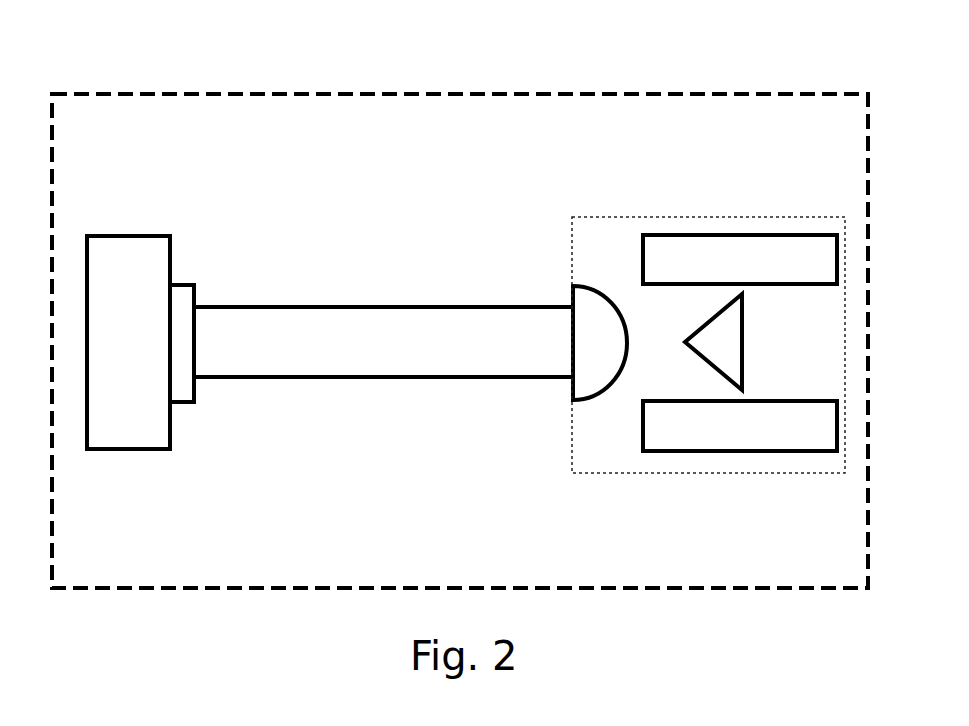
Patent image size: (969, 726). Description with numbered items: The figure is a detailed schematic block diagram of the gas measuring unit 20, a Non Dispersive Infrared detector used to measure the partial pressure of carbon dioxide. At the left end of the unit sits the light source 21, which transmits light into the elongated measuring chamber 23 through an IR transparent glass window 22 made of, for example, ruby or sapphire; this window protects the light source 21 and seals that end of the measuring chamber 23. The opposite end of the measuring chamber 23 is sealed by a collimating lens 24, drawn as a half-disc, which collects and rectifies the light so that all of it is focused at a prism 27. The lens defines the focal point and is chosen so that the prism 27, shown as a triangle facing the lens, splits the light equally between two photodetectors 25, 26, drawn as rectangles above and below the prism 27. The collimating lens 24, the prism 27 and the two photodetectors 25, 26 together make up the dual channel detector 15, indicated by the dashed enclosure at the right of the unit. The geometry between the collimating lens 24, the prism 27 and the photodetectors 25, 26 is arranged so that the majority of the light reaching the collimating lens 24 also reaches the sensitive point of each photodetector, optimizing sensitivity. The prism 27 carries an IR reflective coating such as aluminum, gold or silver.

The gas measuring unit 20 is at (478, 92).
The light source 21 is at (128, 258).
The IR transparent glass window 22 is at (182, 303).
The measuring chamber 23 is at (327, 328).
The collimating lens 24 is at (585, 365).
The dual channel detector 15 is at (792, 216).
The photodetector 26 is at (702, 258).
The photodetector 25 is at (697, 425).
The prism 27 is at (728, 342).